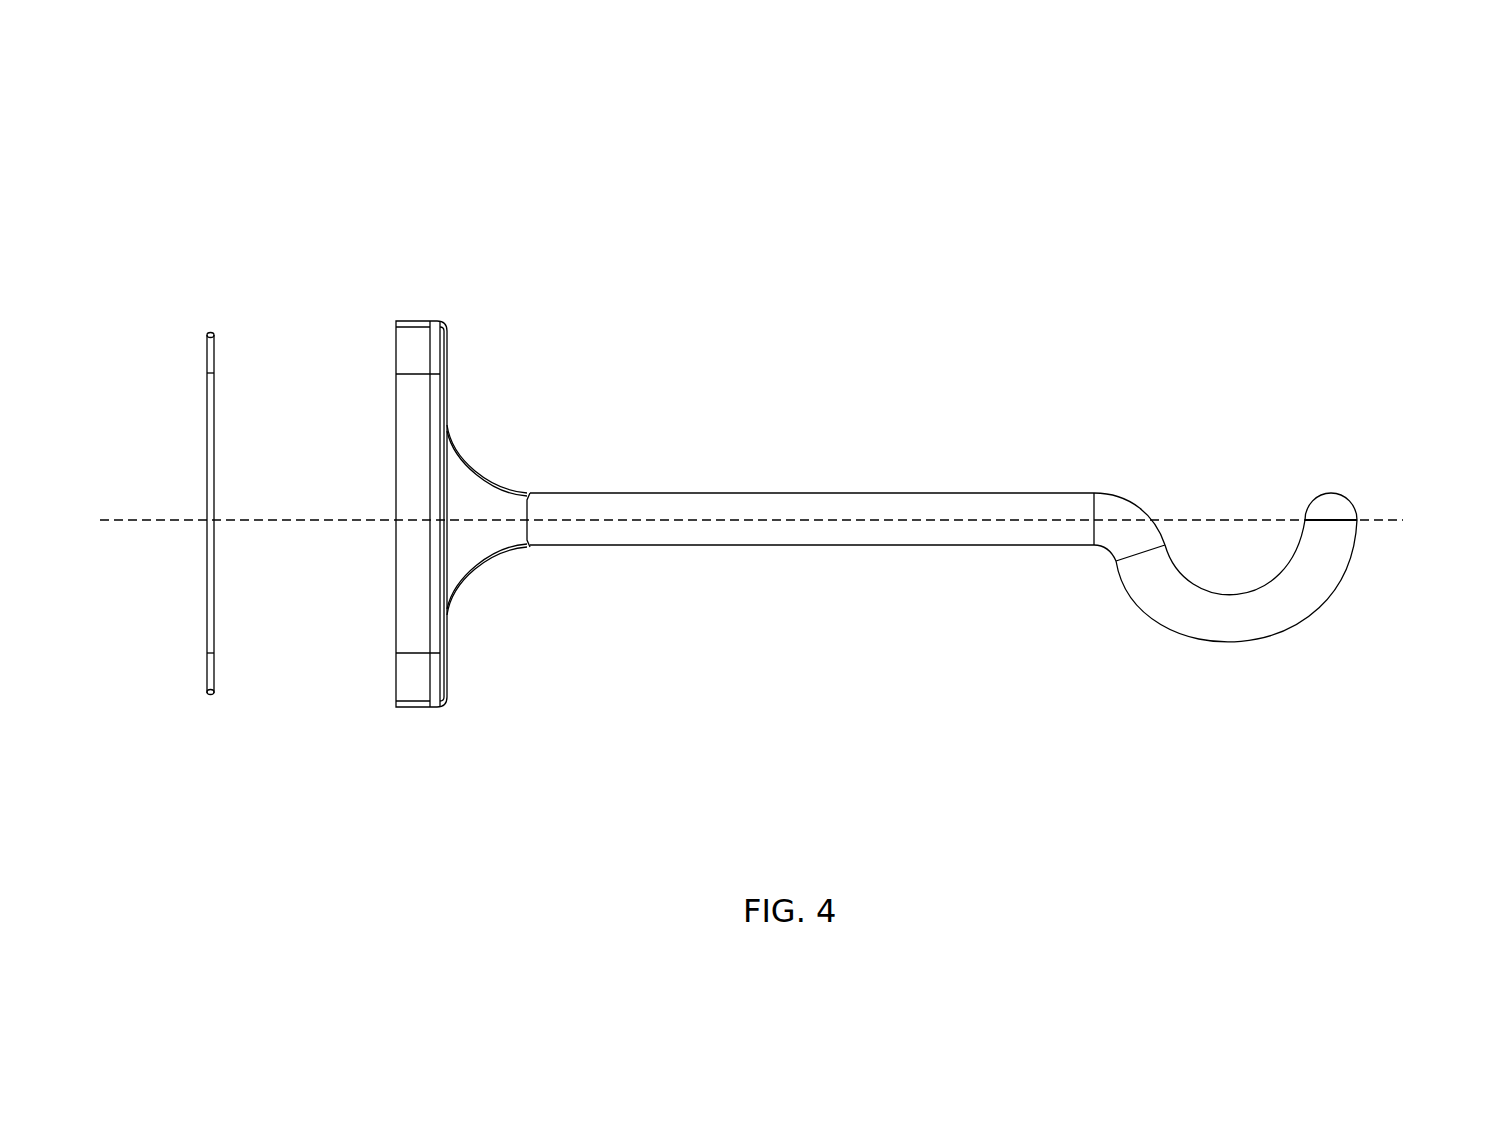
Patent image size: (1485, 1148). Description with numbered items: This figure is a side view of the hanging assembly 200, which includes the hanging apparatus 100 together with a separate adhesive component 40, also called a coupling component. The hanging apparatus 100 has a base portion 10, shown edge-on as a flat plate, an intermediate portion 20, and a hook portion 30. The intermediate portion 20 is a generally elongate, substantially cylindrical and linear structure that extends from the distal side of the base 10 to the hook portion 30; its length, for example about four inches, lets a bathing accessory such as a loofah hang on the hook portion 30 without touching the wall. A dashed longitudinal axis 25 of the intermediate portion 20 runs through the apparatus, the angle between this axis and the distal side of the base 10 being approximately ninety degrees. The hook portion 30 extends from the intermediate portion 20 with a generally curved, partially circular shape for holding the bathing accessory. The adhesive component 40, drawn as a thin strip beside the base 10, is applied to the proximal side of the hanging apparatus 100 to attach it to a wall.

The hanging assembly 200 is at (845, 205).
The hanging apparatus 100 is at (1060, 383).
The base portion 10 is at (421, 765).
The intermediate portion 20 is at (843, 405).
The hook portion 30 is at (1255, 463).
The longitudinal axis 25 is at (1403, 520).
The adhesive component 40 is at (213, 335).